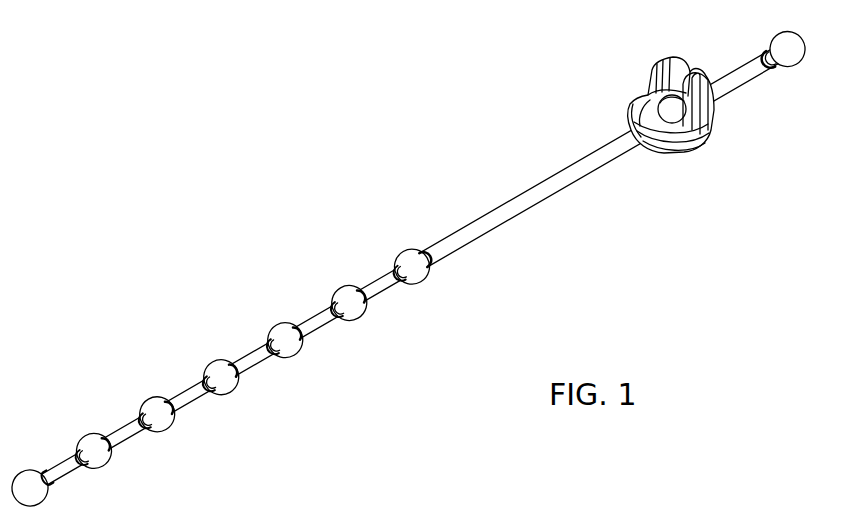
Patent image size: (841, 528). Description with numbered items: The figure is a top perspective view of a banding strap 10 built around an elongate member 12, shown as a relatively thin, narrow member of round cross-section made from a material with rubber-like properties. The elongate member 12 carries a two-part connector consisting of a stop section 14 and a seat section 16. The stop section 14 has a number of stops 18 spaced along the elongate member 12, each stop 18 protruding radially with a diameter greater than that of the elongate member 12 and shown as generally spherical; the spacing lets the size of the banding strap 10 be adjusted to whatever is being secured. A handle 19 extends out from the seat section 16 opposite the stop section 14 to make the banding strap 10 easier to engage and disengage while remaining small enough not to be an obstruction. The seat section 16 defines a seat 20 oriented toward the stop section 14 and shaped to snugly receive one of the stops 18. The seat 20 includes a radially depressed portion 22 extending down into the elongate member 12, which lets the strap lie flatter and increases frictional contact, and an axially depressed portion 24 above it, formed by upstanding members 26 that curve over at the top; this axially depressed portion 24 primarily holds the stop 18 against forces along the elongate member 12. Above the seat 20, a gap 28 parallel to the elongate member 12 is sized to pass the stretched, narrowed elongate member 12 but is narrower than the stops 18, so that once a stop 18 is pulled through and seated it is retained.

The banding strap 10 is at (258, 114).
The elongate member 12 is at (533, 206).
The stop section 14 is at (312, 403).
The seat section 16 is at (725, 160).
The stops 18 is at (158, 398).
The handle 19 is at (754, 60).
The seat 20 is at (668, 140).
The radially depressed portion 22 is at (662, 107).
The axially depressed portion 24 is at (648, 95).
The upstanding members 26 is at (712, 90).
The gap 28 is at (668, 66).